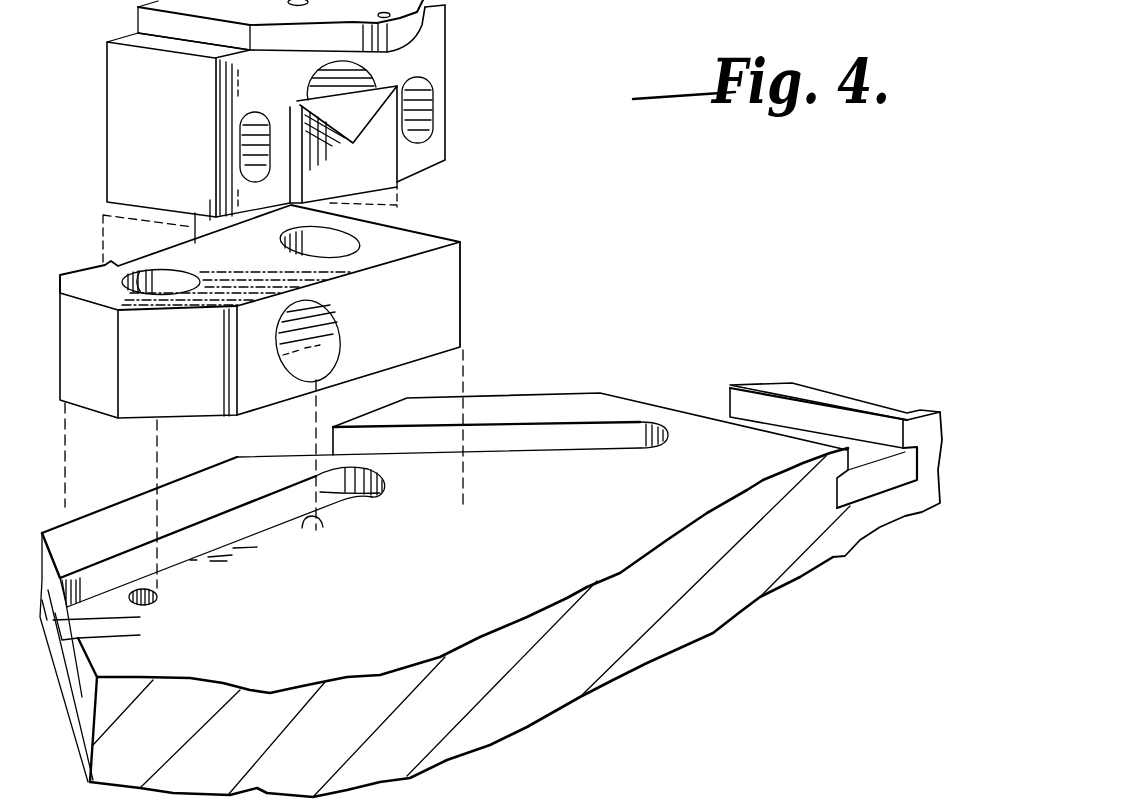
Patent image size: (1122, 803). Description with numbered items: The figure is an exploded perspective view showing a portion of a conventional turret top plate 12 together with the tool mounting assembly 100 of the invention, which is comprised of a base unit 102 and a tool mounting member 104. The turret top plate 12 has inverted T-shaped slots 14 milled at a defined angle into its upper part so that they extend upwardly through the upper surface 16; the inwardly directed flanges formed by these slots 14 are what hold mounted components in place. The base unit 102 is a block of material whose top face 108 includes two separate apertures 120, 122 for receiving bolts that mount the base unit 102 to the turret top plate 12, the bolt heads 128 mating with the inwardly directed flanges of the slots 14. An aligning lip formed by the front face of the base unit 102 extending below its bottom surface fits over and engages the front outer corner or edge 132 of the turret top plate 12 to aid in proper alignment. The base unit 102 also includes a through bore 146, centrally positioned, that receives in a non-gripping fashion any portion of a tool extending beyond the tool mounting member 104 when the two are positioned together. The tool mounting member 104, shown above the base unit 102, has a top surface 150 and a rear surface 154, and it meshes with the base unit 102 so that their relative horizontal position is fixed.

The turret top plate 12 is at (680, 402).
The inverted T-shaped slots 14 is at (63, 638).
The upper surface 16 is at (567, 547).
The tool mounting assembly 100 is at (553, 193).
The base unit 102 is at (472, 288).
The tool mounting member 104 is at (458, 48).
The top face 108 is at (274, 267).
The aperture 120 is at (284, 257).
The aperture 122 is at (62, 290).
The bolt heads 128 is at (160, 590).
The front outer corner or edge 132 is at (55, 530).
The through bore 146 is at (328, 333).
The top surface 150 is at (138, 33).
The rear surface 154 is at (433, 147).